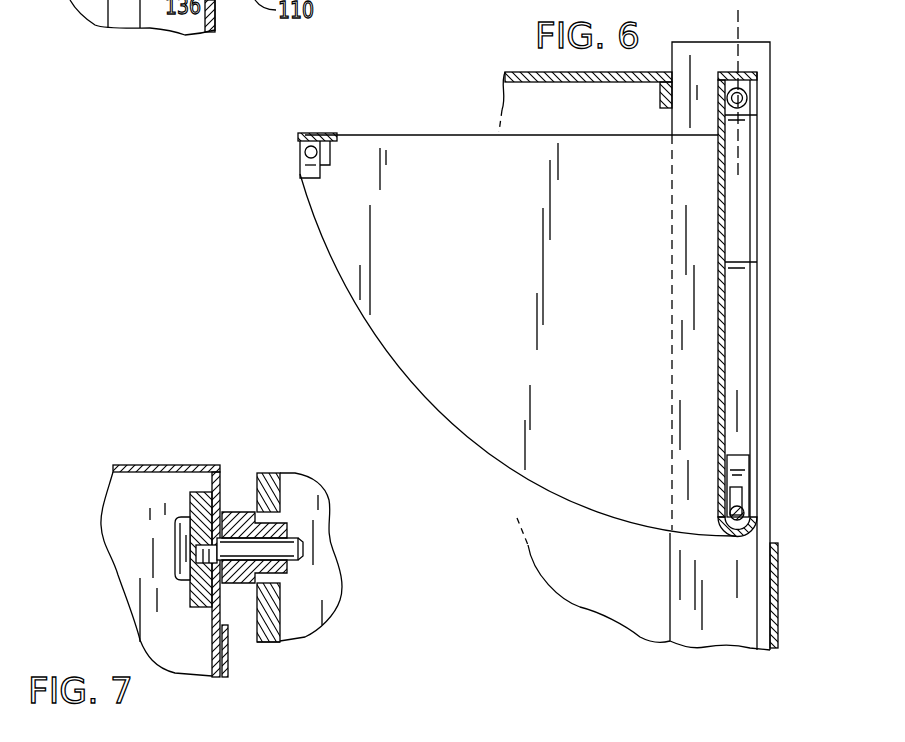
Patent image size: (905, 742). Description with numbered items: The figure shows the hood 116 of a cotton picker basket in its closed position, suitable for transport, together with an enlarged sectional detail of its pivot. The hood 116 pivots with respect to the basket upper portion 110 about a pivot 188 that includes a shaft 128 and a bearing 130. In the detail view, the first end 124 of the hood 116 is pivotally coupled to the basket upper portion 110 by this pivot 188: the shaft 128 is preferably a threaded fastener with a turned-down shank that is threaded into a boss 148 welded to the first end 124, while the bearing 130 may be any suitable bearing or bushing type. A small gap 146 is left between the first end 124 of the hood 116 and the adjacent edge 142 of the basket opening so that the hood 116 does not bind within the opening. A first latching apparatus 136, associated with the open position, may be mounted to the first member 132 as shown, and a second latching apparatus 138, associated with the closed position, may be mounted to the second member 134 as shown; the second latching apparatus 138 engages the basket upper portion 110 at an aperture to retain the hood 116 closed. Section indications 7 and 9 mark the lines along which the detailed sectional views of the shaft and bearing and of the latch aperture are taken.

In FIG. 6, the section line 7- 7 is at (742, 187).
In FIG. 6, the section line 9- 9 is at (742, 590).
In FIG. 7, the basket upper portion 110 is at (327, 612).
In FIG. 6, the hood 116 is at (295, 239).
In FIG. 7, the hood 116 is at (120, 616).
In FIG. 6, the first end 124 is at (519, 299).
In FIG. 7, the first end 124 is at (228, 655).
In FIG. 7, the shaft 128 is at (305, 540).
In FIG. 7, the bearing 130 is at (297, 500).
In FIG. 6, the first member 132 is at (320, 133).
In FIG. 7, the first member 132 is at (170, 465).
In FIG. 6, the second member 134 is at (757, 226).
In FIG. 6, the first latching apparatus 136 is at (297, 152).
In FIG. 6, the second latching apparatus 138 is at (744, 517).
In FIG. 7, the edge 142 is at (267, 643).
In FIG. 7, the gap 146 is at (243, 487).
In FIG. 7, the boss 148 is at (189, 586).
In FIG. 6, the pivot 188 is at (748, 98).
In FIG. 7, the pivot 188 is at (238, 452).